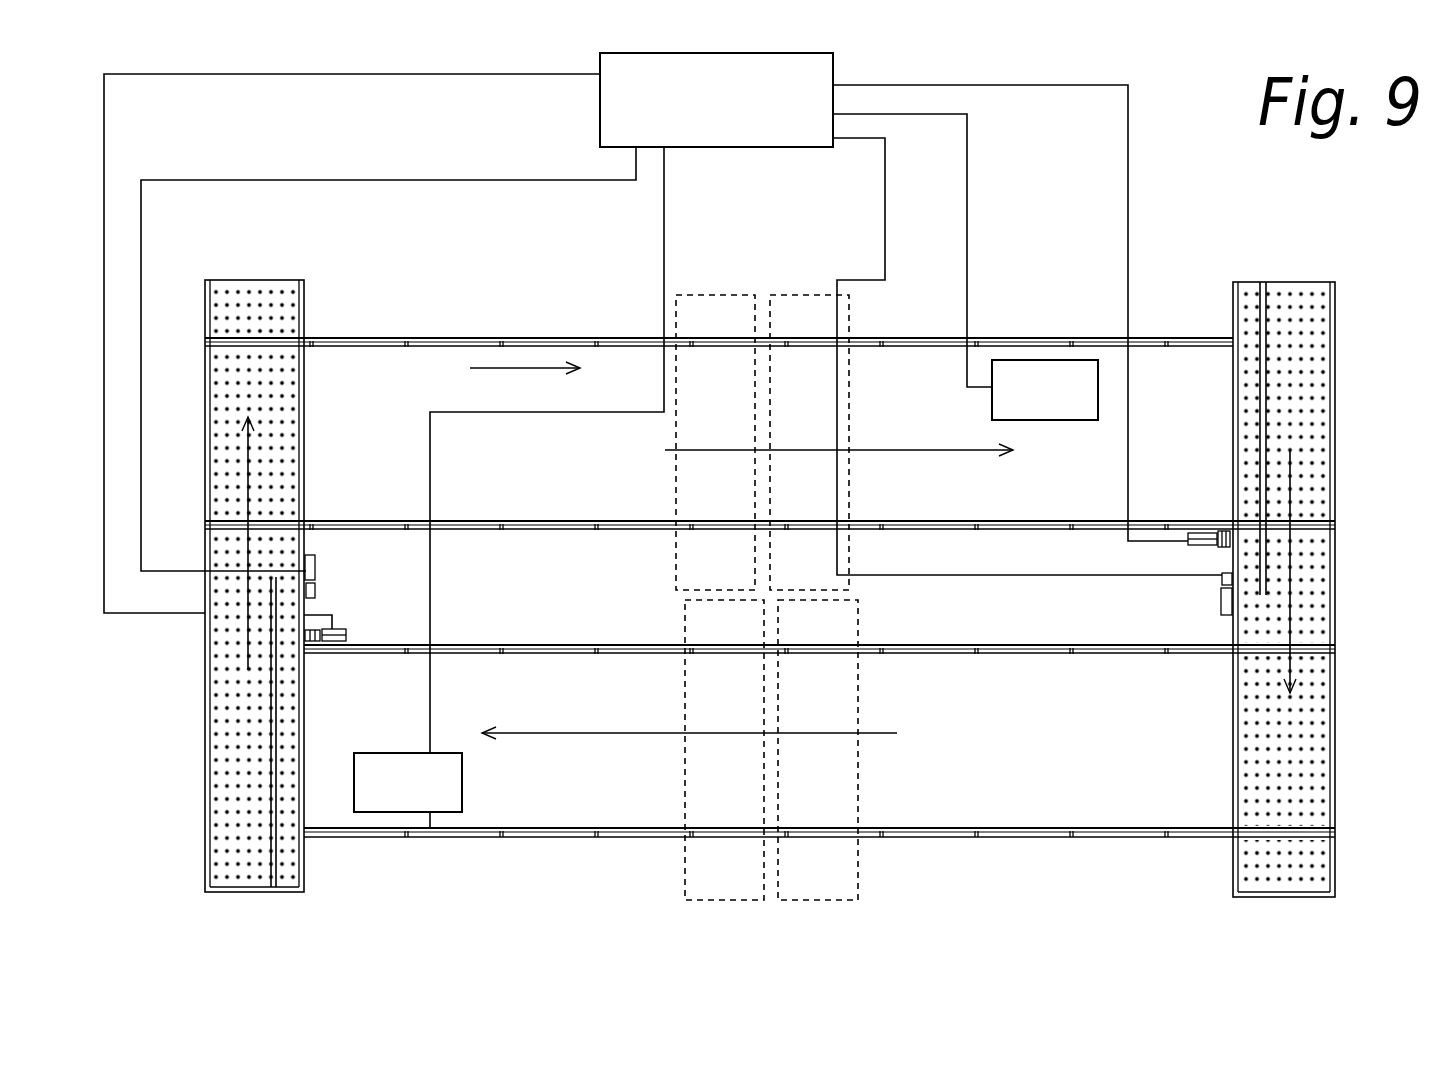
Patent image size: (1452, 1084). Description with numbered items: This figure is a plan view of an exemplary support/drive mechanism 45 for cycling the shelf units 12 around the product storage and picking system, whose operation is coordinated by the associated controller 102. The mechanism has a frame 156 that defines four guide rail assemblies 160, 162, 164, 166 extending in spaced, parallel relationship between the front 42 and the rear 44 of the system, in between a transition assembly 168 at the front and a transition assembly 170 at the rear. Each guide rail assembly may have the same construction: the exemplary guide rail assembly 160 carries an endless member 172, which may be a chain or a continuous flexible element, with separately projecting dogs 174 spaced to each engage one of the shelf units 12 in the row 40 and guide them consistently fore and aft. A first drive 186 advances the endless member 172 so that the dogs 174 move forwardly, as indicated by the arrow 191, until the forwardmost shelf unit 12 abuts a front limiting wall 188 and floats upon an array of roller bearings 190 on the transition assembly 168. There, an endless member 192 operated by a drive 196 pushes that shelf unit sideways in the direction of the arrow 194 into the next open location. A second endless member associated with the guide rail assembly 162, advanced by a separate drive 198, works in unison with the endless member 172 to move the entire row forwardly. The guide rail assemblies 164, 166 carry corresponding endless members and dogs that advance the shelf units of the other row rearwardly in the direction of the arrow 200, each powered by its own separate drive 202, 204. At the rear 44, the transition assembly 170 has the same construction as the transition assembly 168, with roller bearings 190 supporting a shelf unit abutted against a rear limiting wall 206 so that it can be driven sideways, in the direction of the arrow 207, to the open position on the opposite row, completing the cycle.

The shelf unit 12 is at (806, 315).
The row 40 is at (876, 311).
The front 42 is at (1340, 298).
The rear 44 is at (185, 700).
The support/drive mechanism 45 is at (314, 331).
The controller 102 is at (692, 132).
The frame 156 is at (307, 850).
The guide rail assembly 160 is at (1018, 332).
The guide rail assembly 162 is at (991, 519).
The guide rail assembly 164 is at (1009, 639).
The guide rail assembly 166 is at (1001, 824).
The transition assembly 168 is at (1288, 278).
The transition assembly 170 is at (293, 277).
The endless member 172 is at (719, 373).
The dog 174 is at (381, 388).
The first drive 186 is at (1092, 415).
The front limiting wall 188 is at (1337, 372).
The roller bearings 190 is at (239, 888).
The arrow 191 is at (520, 366).
The endless member 192 is at (1217, 402).
The arrow 194 is at (1292, 545).
The drive 196 is at (1180, 603).
The drive 198 is at (1198, 530).
The arrow 200 is at (877, 733).
The drive 202 is at (335, 630).
The drive 204 is at (457, 808).
The rear limiting wall 206 is at (205, 645).
The arrow 207 is at (304, 480).